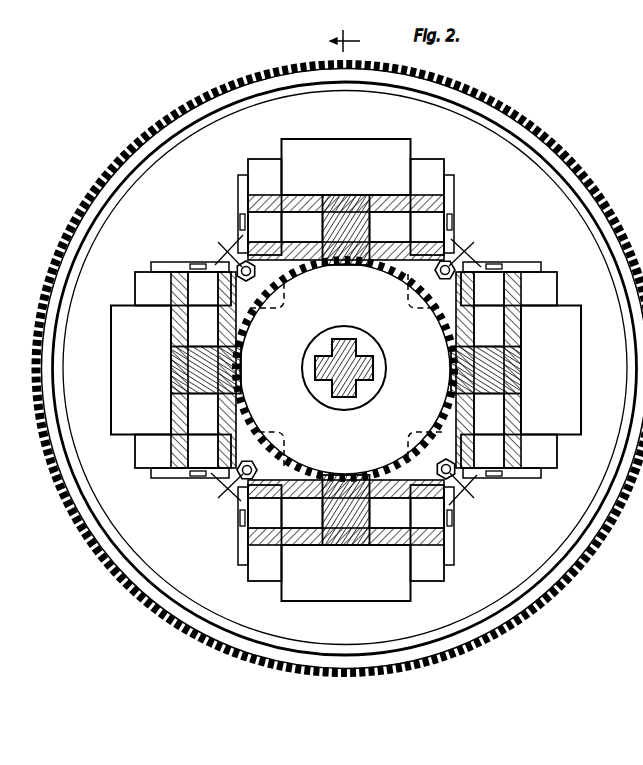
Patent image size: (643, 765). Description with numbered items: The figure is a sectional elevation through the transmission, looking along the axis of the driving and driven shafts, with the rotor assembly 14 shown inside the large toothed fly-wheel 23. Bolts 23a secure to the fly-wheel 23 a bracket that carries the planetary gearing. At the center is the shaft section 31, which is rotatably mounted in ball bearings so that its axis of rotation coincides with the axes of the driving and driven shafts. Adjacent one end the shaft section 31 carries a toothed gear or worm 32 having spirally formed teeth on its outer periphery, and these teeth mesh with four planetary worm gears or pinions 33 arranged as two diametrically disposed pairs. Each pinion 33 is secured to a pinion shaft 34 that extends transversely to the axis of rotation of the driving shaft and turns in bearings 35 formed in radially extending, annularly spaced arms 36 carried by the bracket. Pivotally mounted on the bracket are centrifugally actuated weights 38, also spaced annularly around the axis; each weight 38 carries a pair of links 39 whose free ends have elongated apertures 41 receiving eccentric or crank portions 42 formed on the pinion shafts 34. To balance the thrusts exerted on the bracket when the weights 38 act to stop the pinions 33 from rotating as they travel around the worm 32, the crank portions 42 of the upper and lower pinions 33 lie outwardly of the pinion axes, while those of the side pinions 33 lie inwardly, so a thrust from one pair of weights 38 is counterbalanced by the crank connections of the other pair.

The rotor assembly 14 is at (345, 34).
The fly-wheel 23 is at (205, 635).
The bolts 23a is at (341, 368).
The shaft section 31 is at (360, 360).
The toothed gear or worm 32 is at (462, 421).
The planetary worm gears or pinions 33 is at (332, 200).
The pinion shafts 34 is at (295, 225).
The bearings 35 is at (394, 200).
The arms 36 is at (290, 458).
The centrifugally actuated weights 38 is at (354, 152).
The links 39 is at (257, 185).
The elongated apertures 41 is at (253, 206).
The eccentric or crank portions 42 is at (250, 215).